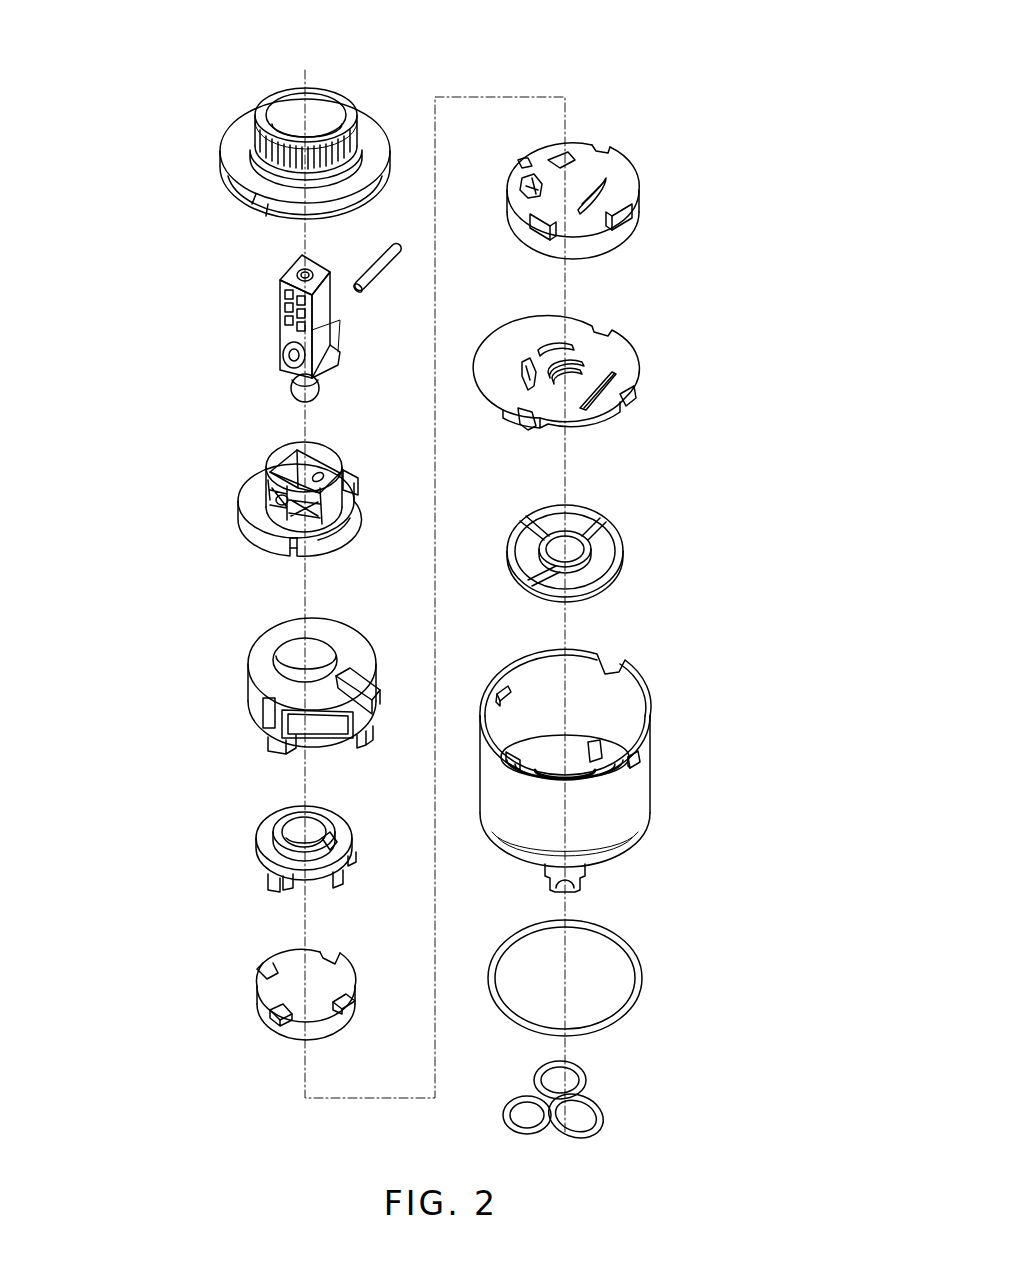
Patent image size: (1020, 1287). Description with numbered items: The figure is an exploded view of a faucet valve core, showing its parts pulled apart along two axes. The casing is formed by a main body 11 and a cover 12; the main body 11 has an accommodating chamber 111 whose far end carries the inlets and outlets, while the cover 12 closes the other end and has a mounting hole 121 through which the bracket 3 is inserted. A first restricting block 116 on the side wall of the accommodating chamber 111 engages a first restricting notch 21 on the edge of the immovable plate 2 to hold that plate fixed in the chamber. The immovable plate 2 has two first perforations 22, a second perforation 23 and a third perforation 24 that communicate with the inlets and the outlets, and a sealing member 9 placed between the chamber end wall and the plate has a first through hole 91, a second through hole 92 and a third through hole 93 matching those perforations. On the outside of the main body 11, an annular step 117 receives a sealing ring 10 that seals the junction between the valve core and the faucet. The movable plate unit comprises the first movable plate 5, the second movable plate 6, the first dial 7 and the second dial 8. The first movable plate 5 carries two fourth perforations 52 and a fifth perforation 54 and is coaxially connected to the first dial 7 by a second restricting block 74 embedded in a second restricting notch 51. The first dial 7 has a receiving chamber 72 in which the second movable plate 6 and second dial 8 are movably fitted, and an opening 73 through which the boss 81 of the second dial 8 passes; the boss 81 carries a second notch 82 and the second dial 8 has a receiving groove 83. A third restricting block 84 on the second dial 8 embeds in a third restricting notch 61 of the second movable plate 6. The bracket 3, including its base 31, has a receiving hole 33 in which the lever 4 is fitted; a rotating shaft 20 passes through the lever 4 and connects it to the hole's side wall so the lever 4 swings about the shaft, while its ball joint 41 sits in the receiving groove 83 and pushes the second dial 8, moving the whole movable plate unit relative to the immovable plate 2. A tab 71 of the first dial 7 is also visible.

The cover 12 is at (235, 150).
The mounting hole 121 is at (284, 112).
The lever 4 is at (292, 326).
The ball joint 41 is at (316, 395).
The rotating shaft 20 is at (376, 281).
The bracket 3 is at (258, 505).
The base plate 31 is at (336, 530).
The receiving hole 33 is at (287, 464).
The first dial 7 is at (256, 673).
The tab 71 is at (362, 740).
The receiving chamber 72 is at (320, 662).
The opening 73 is at (286, 639).
The second restricting block 74 is at (270, 742).
The second dial 8 is at (258, 850).
The boss 81 is at (286, 818).
The second notch 82 is at (336, 851).
The receiving groove 83 is at (320, 836).
The third restricting block 84 is at (278, 880).
The second movable plate 6 is at (268, 989).
The third restricting notch 61 is at (280, 1018).
The first movable plate 5 is at (630, 188).
The second restricting notch 51 is at (606, 150).
The fourth perforations 52 is at (530, 176).
The fifth perforation 54 is at (586, 222).
The immovable plate 2 is at (632, 374).
The first restricting notch 21 is at (630, 402).
The first perforations 22 is at (524, 380).
The second perforation 23 is at (530, 414).
The third perforation 24 is at (600, 408).
The sealing member 9 is at (625, 554).
The first through hole 91 is at (520, 546).
The second through hole 92 is at (522, 558).
The third through hole 93 is at (592, 572).
The main body 11 is at (632, 788).
The accommodating chamber 111 is at (524, 688).
The first restricting block 116 is at (616, 754).
The annular step 117 is at (518, 856).
The sealing ring 10 is at (640, 983).